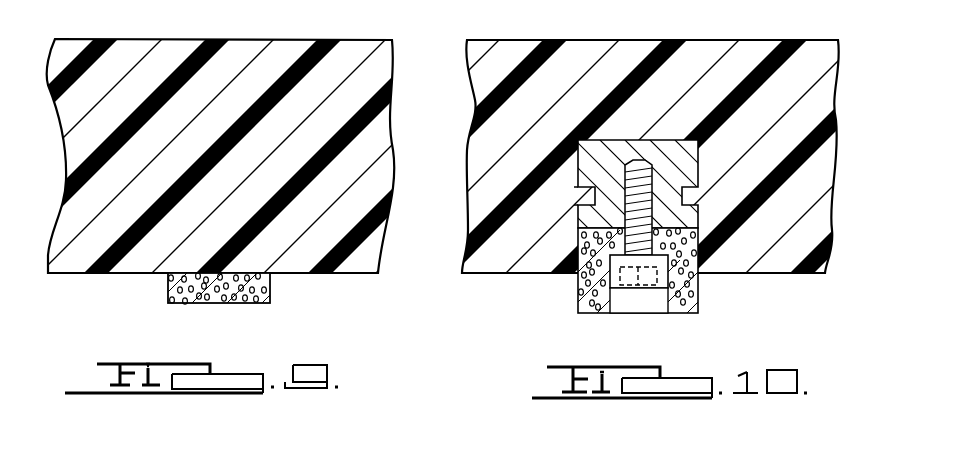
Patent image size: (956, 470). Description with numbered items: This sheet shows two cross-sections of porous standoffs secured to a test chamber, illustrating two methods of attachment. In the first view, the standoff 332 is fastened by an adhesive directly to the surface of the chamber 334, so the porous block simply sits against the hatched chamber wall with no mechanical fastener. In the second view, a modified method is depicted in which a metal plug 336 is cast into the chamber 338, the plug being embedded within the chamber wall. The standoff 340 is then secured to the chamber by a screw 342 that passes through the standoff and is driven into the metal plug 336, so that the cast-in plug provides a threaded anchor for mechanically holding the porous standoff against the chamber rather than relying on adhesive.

In FIG. 9, the standoff 332 is at (205, 296).
In FIG. 9, the chamber 334 is at (323, 273).
In FIG. 10, the metal plug 336 is at (692, 222).
In FIG. 10, the chamber 338 is at (495, 253).
In FIG. 10, the standoff 340 is at (680, 265).
In FIG. 10, the screw 342 is at (615, 277).